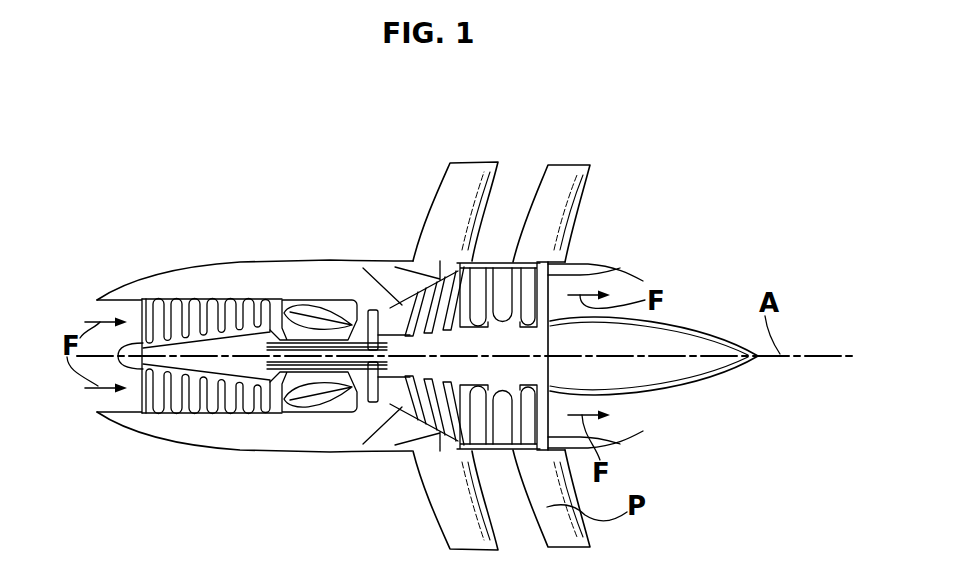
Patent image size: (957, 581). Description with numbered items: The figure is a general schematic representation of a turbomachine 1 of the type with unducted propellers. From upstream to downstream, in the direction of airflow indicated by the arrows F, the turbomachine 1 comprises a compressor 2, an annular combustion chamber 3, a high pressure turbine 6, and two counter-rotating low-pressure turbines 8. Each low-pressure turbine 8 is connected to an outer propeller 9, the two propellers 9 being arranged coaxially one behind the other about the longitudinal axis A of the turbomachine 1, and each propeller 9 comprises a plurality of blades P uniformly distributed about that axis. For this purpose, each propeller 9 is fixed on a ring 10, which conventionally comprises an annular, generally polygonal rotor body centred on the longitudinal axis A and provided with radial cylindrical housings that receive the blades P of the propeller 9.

The turbomachine 1 is at (168, 200).
The compressor 2 is at (163, 415).
The annular combustion chamber 3 is at (317, 408).
The high pressure turbine 6 is at (368, 413).
The low-pressure turbine 8 is at (397, 300).
The outer propeller 9 is at (480, 158).
The ring 10 is at (440, 394).